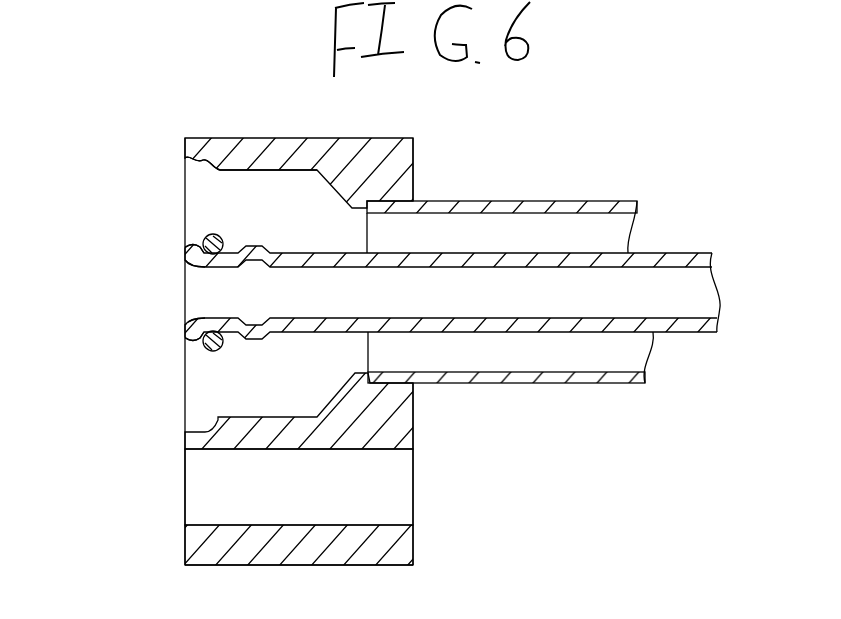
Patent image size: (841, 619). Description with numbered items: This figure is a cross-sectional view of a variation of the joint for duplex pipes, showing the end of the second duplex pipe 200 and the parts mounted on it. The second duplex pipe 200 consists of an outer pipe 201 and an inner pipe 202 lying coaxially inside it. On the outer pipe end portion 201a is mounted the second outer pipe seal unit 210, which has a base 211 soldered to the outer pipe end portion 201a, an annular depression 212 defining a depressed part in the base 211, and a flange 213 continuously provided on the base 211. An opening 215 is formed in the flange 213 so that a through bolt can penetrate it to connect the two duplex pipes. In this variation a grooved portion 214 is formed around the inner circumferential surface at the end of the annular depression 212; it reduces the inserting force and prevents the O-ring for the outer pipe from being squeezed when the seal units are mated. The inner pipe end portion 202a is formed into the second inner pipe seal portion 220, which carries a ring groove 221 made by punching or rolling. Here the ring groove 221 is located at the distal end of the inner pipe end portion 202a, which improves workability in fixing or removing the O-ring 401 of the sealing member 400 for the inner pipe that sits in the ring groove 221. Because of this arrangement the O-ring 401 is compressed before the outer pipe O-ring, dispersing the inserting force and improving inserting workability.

The sealing member for the inner pipe 400 is at (228, 82).
The second outer pipe seal unit 210 is at (180, 137).
The base 211 is at (403, 153).
The annular depression 212 is at (232, 170).
The flange 213 is at (403, 553).
The grooved portion 214 is at (183, 164).
The opening 215 is at (370, 520).
The second inner pipe seal portion 220 is at (198, 268).
The ring groove 221 is at (245, 247).
The O-ring 401 is at (214, 234).
The second duplex pipe 200 is at (760, 148).
The outer pipe 201 is at (652, 185).
The outer pipe end portion 201a is at (388, 208).
The inner pipe 202 is at (712, 253).
The inner pipe end portion 202a is at (285, 258).